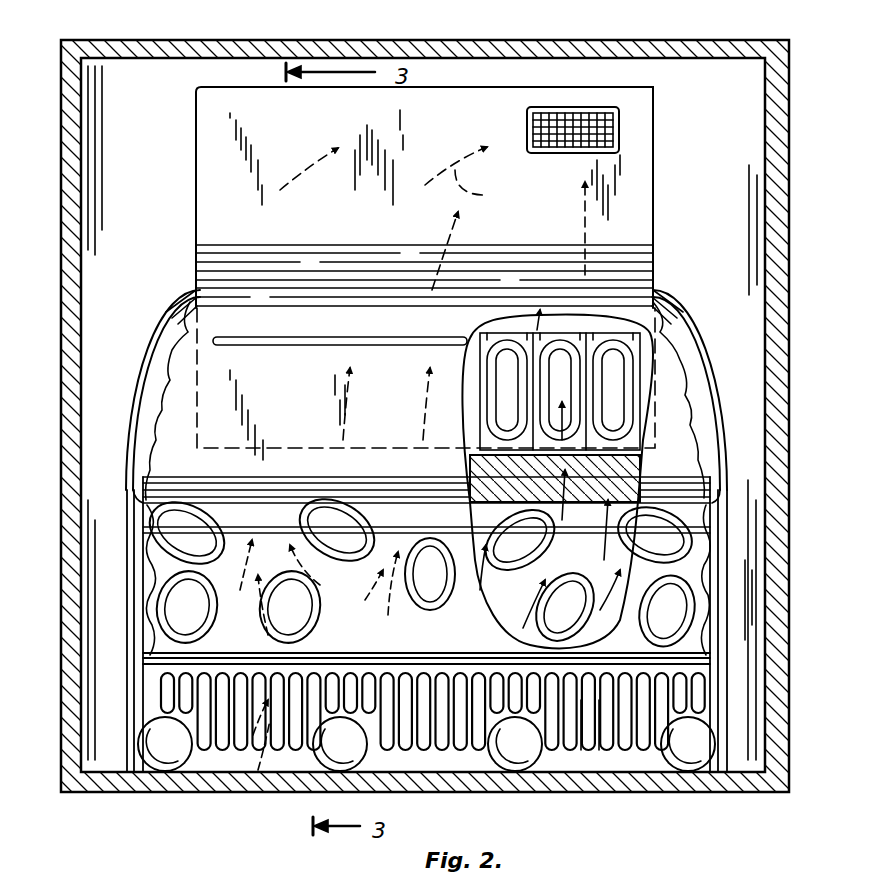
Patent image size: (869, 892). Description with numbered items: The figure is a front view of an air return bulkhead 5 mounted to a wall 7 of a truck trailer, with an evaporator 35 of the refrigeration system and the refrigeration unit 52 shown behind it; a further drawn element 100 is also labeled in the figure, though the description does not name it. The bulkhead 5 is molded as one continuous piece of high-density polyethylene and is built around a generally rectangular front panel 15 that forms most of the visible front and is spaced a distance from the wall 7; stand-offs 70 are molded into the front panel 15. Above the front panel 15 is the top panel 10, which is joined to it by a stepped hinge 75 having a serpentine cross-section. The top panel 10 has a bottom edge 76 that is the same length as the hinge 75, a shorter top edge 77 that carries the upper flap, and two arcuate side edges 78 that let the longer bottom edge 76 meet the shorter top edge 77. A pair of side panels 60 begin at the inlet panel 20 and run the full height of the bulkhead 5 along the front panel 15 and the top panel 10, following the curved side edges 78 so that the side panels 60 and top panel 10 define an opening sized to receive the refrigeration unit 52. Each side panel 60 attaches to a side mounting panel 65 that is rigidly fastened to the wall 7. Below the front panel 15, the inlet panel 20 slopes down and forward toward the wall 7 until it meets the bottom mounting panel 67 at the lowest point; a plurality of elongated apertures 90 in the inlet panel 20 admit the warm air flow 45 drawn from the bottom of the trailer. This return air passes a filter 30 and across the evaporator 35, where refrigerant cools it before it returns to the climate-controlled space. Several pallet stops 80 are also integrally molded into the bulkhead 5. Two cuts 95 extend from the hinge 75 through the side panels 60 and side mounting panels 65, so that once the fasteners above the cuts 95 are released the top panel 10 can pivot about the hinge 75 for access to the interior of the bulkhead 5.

The air return bulkhead 5 is at (168, 292).
The wall 7 is at (712, 203).
The top panel 10 is at (190, 348).
The front panel 15 is at (150, 545).
The inlet panel 20 is at (665, 760).
The filter 30 is at (615, 475).
The evaporator 35 is at (605, 372).
The warm air flow 45 is at (465, 188).
The refrigeration unit 52 is at (196, 134).
The side panels 60 is at (150, 592).
The side mounting panel 65 is at (135, 635).
The bottom mounting panel 67 is at (590, 720).
The stand-offs 70 is at (421, 570).
The stepped hinge 75 is at (197, 483).
The bottom edge 76 is at (303, 490).
The top edge 77 is at (338, 318).
The side edges 78 is at (152, 398).
The pallet stops 80 is at (168, 750).
The elongated apertures 90 is at (495, 685).
The cuts 95 is at (136, 482).
The vent grille 100 is at (619, 132).